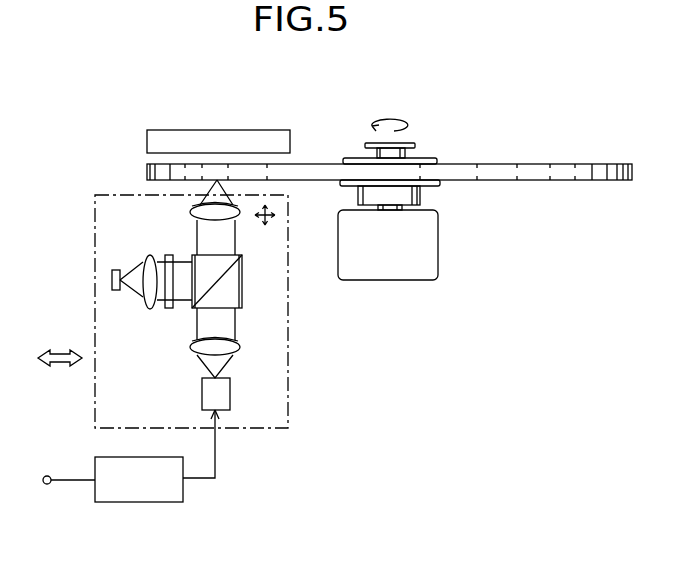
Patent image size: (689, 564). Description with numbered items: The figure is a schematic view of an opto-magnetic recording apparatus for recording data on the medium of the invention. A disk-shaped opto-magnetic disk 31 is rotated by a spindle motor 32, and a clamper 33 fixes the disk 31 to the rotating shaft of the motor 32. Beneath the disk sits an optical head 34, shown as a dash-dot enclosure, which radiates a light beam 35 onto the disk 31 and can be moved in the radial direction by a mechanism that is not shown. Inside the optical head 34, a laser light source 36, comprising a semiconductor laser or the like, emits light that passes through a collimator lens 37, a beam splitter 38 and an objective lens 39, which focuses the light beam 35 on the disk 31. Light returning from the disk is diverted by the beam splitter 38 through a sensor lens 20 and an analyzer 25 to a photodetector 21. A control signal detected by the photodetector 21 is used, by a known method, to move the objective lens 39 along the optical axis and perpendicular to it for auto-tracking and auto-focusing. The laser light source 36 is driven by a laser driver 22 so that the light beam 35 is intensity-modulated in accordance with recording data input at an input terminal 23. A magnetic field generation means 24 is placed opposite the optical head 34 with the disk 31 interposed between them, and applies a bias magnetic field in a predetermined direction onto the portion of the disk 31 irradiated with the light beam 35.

The sensor lens 20 is at (150, 309).
The photodetector 21 is at (117, 291).
The laser driver 22 is at (137, 503).
The input terminal 23 is at (48, 485).
The magnetic field generation means 24 is at (262, 140).
The analyzer 25 is at (169, 308).
The opto-magnetic disk 31 is at (147, 176).
The spindle motor 32 is at (373, 280).
The clamper 33 is at (408, 143).
The optical head 34 is at (290, 413).
The light beam 35 is at (190, 198).
The laser light source 36 is at (231, 395).
The collimator lens 37 is at (240, 350).
The beam splitter 38 is at (242, 290).
The objective lens 39 is at (241, 216).